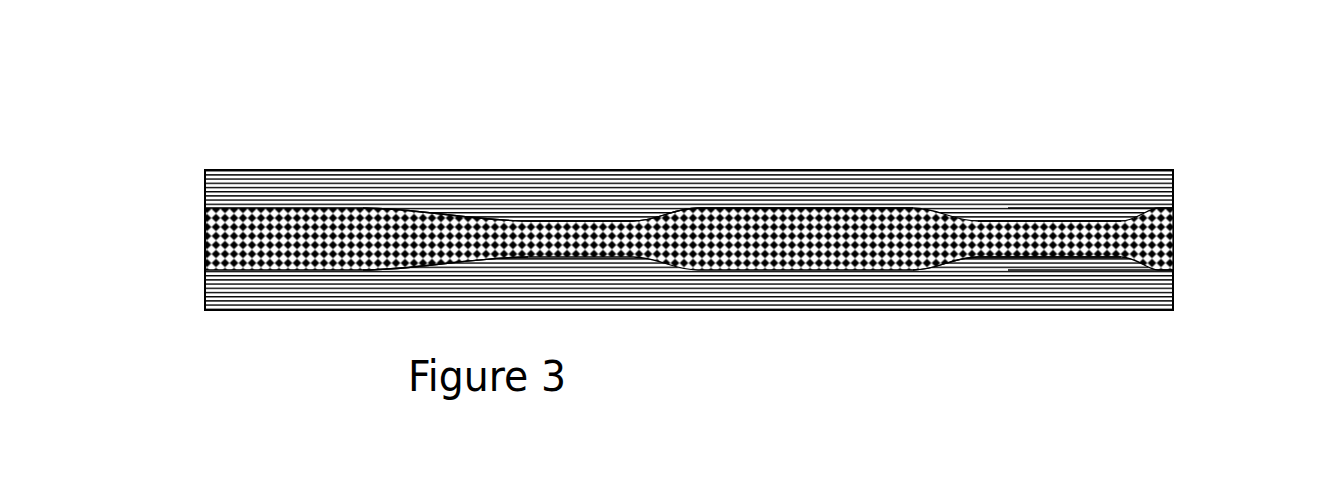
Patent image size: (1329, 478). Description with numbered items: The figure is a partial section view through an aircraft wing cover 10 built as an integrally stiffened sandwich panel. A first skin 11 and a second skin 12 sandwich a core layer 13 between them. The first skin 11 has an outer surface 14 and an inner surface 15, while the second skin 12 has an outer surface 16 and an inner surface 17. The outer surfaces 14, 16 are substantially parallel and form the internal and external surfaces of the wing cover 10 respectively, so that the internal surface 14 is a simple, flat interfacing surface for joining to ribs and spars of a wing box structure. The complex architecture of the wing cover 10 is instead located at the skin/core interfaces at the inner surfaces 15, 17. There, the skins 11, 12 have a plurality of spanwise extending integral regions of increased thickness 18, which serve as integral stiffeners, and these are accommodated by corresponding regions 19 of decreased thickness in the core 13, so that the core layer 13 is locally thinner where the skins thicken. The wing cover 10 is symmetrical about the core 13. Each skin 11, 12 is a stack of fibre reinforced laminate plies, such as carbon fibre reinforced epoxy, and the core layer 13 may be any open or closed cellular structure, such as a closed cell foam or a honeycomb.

The aircraft wing cover 10 is at (1168, 101).
The first skin 11 is at (206, 162).
The second skin 12 is at (207, 301).
The core layer 13 is at (1167, 225).
The outer surface of the first skin 14 is at (562, 148).
The inner surface of the first skin 15 is at (693, 198).
The outer surface of the second skin 16 is at (648, 301).
The inner surface of the second skin 17 is at (977, 250).
The integral regions of increased thickness 18 is at (470, 188).
The regions of decreased thickness 19 is at (595, 212).